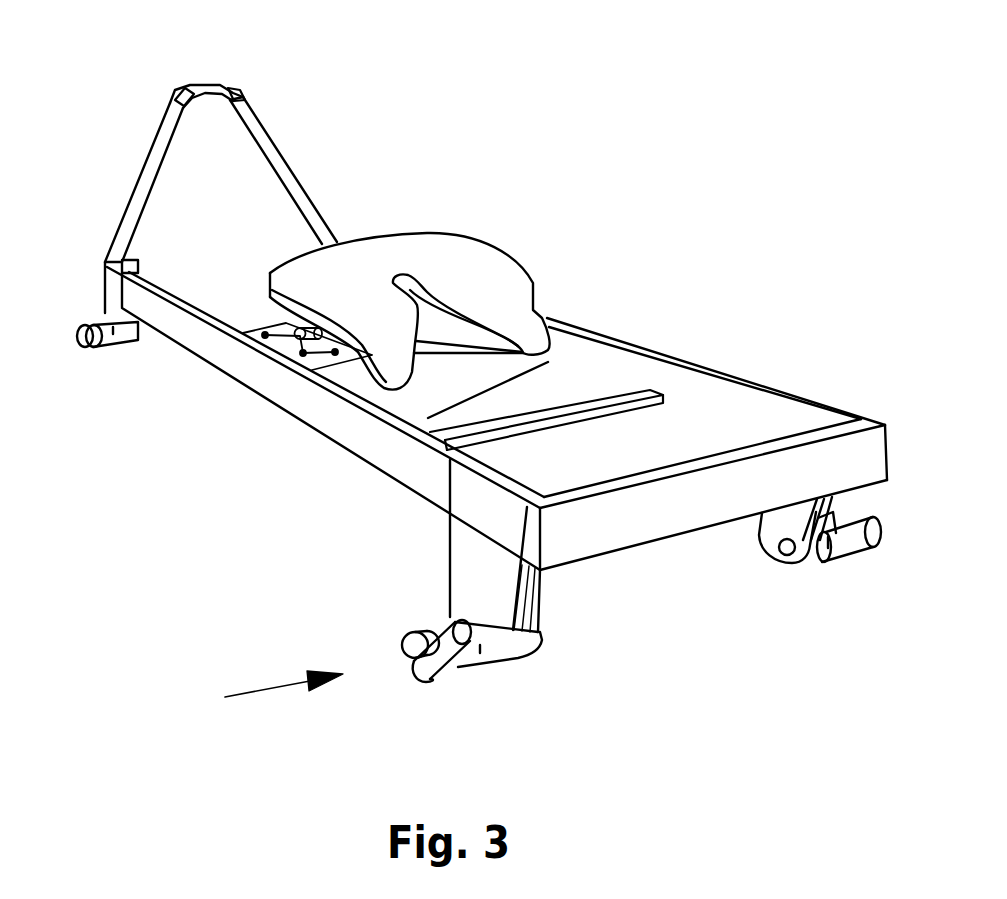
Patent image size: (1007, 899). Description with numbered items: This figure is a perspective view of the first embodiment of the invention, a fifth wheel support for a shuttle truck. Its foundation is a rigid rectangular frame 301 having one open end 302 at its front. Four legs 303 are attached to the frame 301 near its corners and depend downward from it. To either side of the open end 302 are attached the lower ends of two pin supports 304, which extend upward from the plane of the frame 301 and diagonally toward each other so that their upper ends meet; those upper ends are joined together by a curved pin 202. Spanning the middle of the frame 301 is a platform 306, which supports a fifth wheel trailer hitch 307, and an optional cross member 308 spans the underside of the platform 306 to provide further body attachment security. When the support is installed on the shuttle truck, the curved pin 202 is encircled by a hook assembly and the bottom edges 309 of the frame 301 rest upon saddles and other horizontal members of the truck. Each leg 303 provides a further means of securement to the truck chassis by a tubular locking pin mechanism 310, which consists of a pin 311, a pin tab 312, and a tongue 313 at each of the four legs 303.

The curved pin 202 is at (208, 87).
The rigid rectangular frame 301 is at (716, 390).
The open end 302 is at (240, 257).
The legs 303 is at (460, 588).
The pin supports 304 is at (268, 135).
The platform 306 is at (437, 330).
The fifth wheel trailer hitch 307 is at (333, 308).
The cross member 308 is at (607, 402).
The bottom edges 309 is at (362, 448).
The tubular locking pin mechanism 310 is at (257, 691).
The pin 311 is at (410, 647).
The pin tab 312 is at (458, 663).
The tongue 313 is at (518, 657).